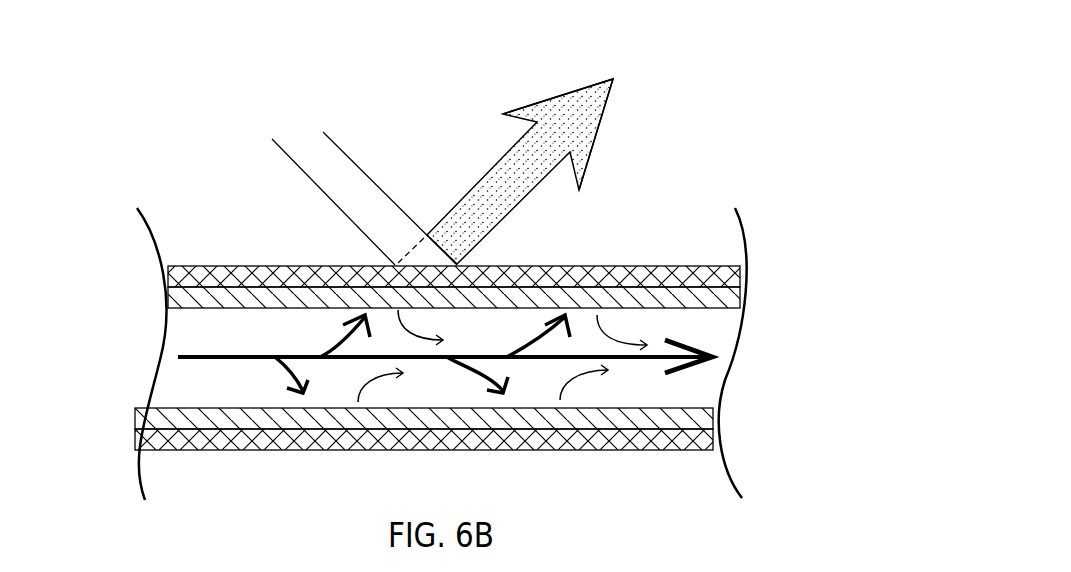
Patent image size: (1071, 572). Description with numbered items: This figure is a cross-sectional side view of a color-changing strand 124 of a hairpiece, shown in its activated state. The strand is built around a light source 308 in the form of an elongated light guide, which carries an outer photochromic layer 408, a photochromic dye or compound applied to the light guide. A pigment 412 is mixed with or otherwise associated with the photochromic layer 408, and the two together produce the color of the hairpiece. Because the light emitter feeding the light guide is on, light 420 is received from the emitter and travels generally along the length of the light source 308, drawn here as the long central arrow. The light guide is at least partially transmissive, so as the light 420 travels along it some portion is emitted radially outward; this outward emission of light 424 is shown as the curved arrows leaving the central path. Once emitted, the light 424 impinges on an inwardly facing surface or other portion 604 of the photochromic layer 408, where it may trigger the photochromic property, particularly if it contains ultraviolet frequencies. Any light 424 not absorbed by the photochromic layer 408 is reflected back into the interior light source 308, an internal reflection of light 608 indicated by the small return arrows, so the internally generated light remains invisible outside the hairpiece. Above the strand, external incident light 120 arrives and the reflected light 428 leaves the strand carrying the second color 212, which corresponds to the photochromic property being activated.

The color-changing strand 124 is at (176, 149).
The incident light 120 is at (360, 165).
The second color 212 is at (572, 113).
The reflected light 428 is at (595, 142).
The pigment 412 is at (740, 270).
The photochromic layer 408 is at (735, 300).
The light source 308 is at (717, 343).
The light 420 is at (223, 355).
The outwardly emitted light 424 is at (287, 357).
The inwardly facing surface 604 is at (232, 309).
The internal reflection of light 608 is at (377, 378).